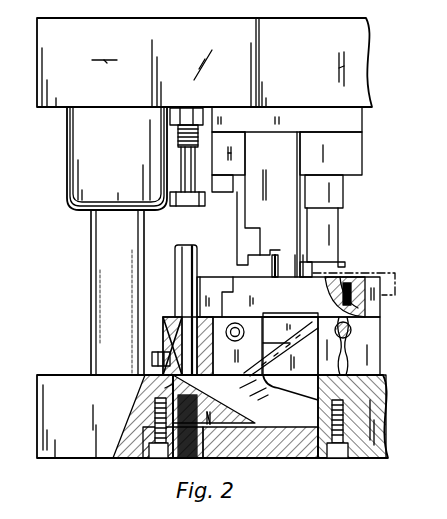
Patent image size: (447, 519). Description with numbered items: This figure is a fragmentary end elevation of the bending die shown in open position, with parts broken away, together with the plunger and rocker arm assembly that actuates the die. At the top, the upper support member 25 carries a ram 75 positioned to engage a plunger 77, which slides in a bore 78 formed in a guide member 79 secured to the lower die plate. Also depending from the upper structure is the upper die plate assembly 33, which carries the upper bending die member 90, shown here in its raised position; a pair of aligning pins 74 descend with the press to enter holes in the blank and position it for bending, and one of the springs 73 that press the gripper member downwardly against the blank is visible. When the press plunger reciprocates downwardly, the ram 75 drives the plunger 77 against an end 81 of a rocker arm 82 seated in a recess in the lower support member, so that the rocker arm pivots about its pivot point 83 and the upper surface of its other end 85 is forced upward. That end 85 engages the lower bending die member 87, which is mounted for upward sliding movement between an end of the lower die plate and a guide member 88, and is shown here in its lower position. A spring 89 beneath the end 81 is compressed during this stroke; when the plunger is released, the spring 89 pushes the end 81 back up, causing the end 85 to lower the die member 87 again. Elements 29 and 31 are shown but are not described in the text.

The upper support member 25 is at (97, 50).
The guide rods 29 is at (112, 301).
The ram housing 31 is at (102, 160).
The upper die plate assembly 33 is at (355, 142).
The spring 73 is at (352, 302).
The aligning pins 74 is at (300, 257).
The ram 75 is at (183, 180).
The plunger 77 is at (181, 258).
The bore 78 is at (174, 330).
The guide member 79 is at (163, 345).
The end of rocker arm 81 is at (177, 388).
The rocker arm 82 is at (285, 416).
The pivot point 83 is at (258, 427).
The other end of rocker arm 85 is at (313, 425).
The lower bending die member 87 is at (313, 358).
The guide member 88 is at (222, 328).
The spring 89 is at (173, 447).
The upper bending die member 90 is at (287, 187).